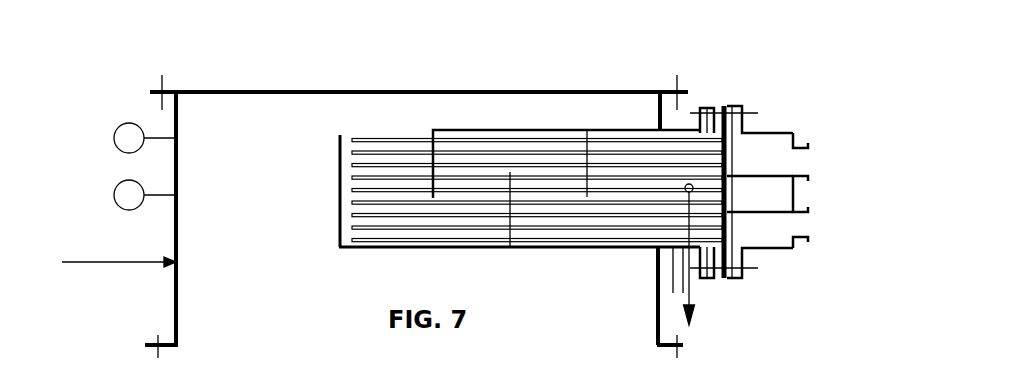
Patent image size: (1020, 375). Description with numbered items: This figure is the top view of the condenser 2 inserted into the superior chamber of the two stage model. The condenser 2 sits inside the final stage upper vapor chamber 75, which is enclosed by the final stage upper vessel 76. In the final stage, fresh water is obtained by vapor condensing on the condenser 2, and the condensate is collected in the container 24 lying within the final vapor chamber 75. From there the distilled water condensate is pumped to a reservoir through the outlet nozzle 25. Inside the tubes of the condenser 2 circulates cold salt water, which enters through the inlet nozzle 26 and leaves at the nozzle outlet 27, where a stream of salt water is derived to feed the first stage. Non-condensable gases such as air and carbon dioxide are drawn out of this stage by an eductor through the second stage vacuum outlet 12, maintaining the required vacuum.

The condenser 2 is at (477, 150).
The second stage vacuum outlet 12 is at (690, 285).
The container 24 is at (467, 247).
The outlet nozzle 25 is at (668, 288).
The inlet nozzle 26 is at (793, 248).
The nozzle outlet 27 is at (793, 132).
The final stage upper vapor chamber 75 is at (245, 185).
The final stage upper vessel 76 is at (102, 268).